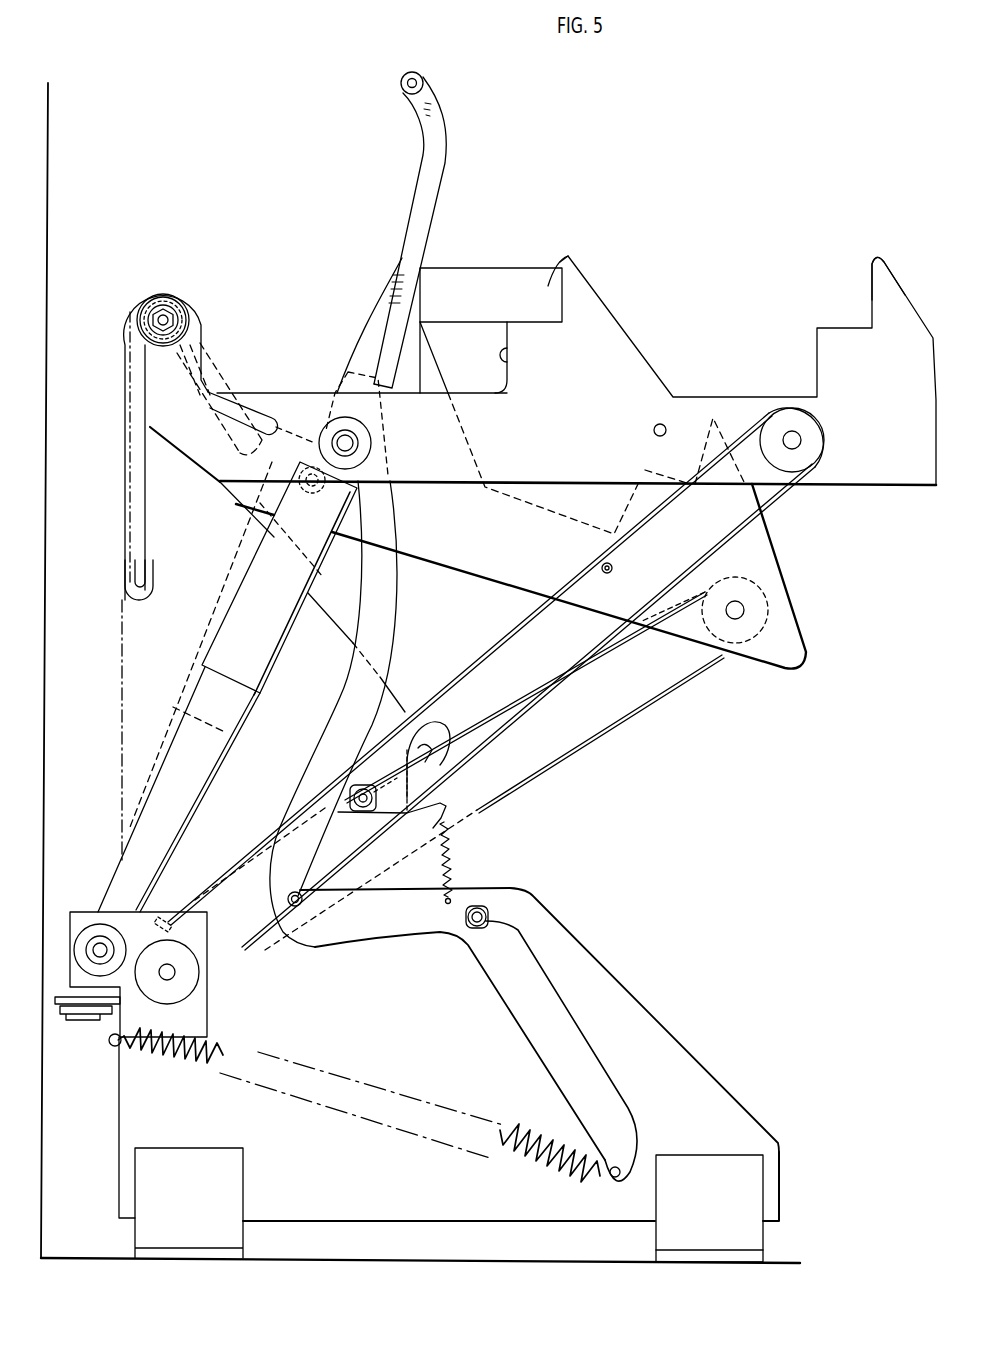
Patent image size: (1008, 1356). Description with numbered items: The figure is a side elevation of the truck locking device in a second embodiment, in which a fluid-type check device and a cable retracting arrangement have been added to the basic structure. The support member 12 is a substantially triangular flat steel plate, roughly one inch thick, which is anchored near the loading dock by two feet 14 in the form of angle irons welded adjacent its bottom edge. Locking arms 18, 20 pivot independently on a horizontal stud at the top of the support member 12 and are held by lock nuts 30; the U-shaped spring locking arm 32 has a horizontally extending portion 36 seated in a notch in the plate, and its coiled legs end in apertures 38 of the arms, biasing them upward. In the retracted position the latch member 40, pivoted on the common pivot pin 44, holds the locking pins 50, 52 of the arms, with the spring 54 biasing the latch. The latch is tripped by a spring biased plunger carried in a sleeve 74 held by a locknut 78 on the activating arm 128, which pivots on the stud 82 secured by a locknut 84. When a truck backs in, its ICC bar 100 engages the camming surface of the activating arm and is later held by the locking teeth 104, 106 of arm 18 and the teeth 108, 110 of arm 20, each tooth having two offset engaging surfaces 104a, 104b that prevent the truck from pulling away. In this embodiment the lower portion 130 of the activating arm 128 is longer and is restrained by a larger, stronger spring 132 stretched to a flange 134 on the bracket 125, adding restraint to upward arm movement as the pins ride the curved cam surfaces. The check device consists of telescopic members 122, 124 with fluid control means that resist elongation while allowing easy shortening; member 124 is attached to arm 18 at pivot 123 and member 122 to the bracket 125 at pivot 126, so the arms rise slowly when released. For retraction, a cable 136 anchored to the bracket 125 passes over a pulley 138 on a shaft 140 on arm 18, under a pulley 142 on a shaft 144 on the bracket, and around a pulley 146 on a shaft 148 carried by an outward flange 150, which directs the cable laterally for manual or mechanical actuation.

The support member 12 is at (643, 1033).
The feet 14 is at (210, 1152).
The locking arm 18 is at (900, 489).
The locking arm 20 is at (762, 656).
The lock nuts 30 is at (158, 318).
The spring locking arm 32 is at (160, 284).
The horizontally extending portion 36 is at (138, 596).
The apertures 38 is at (251, 392).
The latch member 40 is at (442, 730).
The pivot pin 44 is at (356, 788).
The locking pin 50 is at (657, 427).
The locking pin 52 is at (612, 576).
The spring 54 is at (452, 862).
The sleeve 74 is at (288, 900).
The locknut 78 is at (298, 892).
The stud 82 is at (488, 918).
The locknut 84 is at (490, 910).
The ICC bar 100 is at (482, 298).
The tooth 104 is at (610, 352).
The ICC bar engaging surface a 104a is at (510, 372).
The ICC bar engaging surface b 104b is at (552, 285).
The tooth 106 is at (884, 272).
The tooth 108 is at (428, 384).
The tooth 110 is at (792, 636).
The telescopic member 122 is at (180, 807).
The pivot 123 is at (356, 444).
The telescopic member 124 is at (329, 570).
The bracket 125 is at (90, 905).
The pivot 126 is at (76, 918).
The activating arm 128 is at (384, 637).
The lower portion 130 is at (612, 1118).
The spring 132 is at (236, 1046).
The flange 134 is at (112, 1048).
The cable 136 is at (473, 670).
The pulley 138 is at (812, 455).
The shaft 140 is at (800, 438).
The pulley 142 is at (182, 975).
The shaft 144 is at (172, 964).
The pulley 146 is at (56, 1008).
The shaft 148 is at (90, 1024).
The flange 150 is at (160, 972).